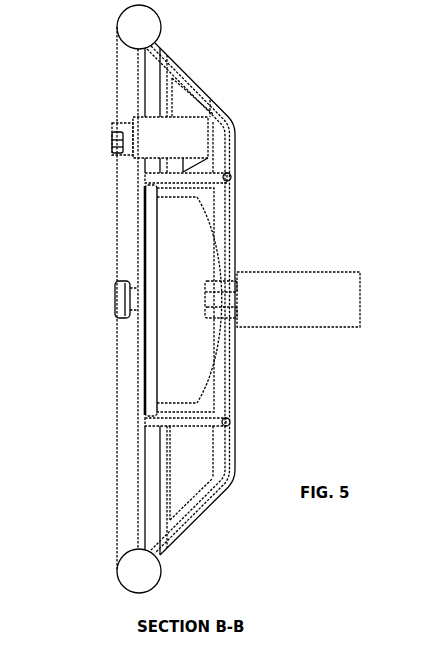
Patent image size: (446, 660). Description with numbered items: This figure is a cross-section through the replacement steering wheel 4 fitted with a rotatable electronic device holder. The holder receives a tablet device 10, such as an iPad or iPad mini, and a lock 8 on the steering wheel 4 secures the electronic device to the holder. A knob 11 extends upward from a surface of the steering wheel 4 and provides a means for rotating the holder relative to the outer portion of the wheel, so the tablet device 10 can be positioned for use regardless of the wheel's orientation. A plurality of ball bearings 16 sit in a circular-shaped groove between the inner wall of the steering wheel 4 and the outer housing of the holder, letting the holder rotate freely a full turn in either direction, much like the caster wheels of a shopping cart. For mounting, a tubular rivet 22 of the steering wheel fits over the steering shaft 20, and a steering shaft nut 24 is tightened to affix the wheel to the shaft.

The steering wheel 4 is at (125, 33).
The lock 8 is at (190, 133).
The tablet device 10 is at (146, 234).
The knob 11 is at (114, 299).
The ball bearings 16 is at (231, 176).
The steering shaft 20 is at (312, 292).
The tubular rivet 22 is at (237, 279).
The steering shaft nut 24 is at (216, 321).